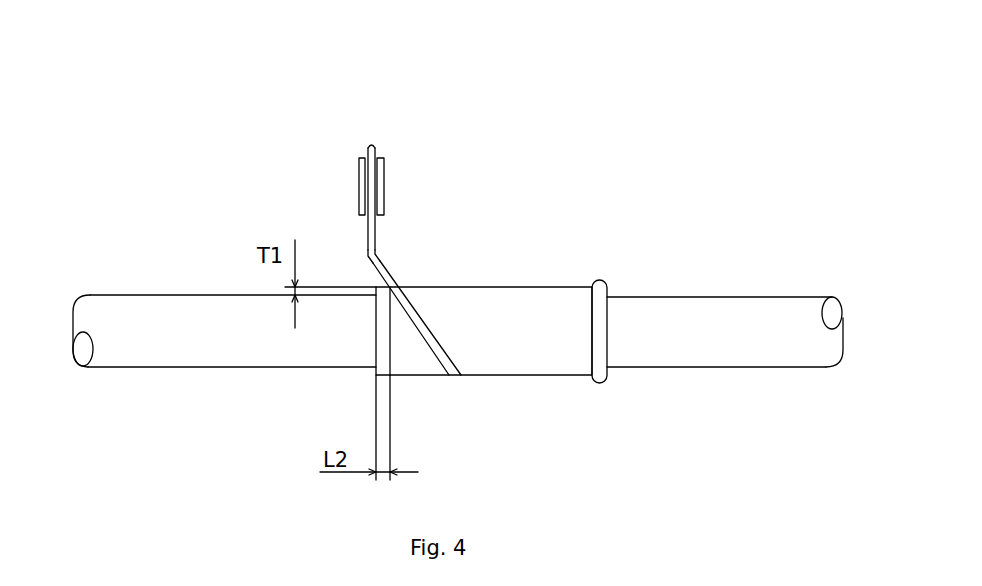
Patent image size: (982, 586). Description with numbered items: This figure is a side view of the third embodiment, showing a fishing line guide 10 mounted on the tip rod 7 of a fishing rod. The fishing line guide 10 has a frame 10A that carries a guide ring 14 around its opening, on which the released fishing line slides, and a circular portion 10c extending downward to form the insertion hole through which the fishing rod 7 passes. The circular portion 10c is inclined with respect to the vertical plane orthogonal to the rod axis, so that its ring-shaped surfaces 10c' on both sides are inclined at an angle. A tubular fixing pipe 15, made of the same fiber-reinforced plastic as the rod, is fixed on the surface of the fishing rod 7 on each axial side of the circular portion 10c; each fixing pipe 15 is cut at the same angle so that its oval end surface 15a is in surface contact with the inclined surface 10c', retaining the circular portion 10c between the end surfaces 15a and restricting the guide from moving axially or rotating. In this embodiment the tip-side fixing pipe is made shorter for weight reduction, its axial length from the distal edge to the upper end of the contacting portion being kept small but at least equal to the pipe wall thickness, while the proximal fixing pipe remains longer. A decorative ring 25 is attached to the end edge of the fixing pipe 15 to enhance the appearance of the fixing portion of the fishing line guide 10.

The tip rod 7 is at (176, 308).
The fishing line guide 10 is at (393, 104).
The frame 10A is at (368, 150).
The circular portion 10c is at (428, 303).
The inclined surface 10c' is at (481, 295).
The guide ring 14 is at (359, 172).
The fixing pipe 15 is at (410, 363).
The end surface 15a is at (413, 290).
The decorative ring 25 is at (604, 332).